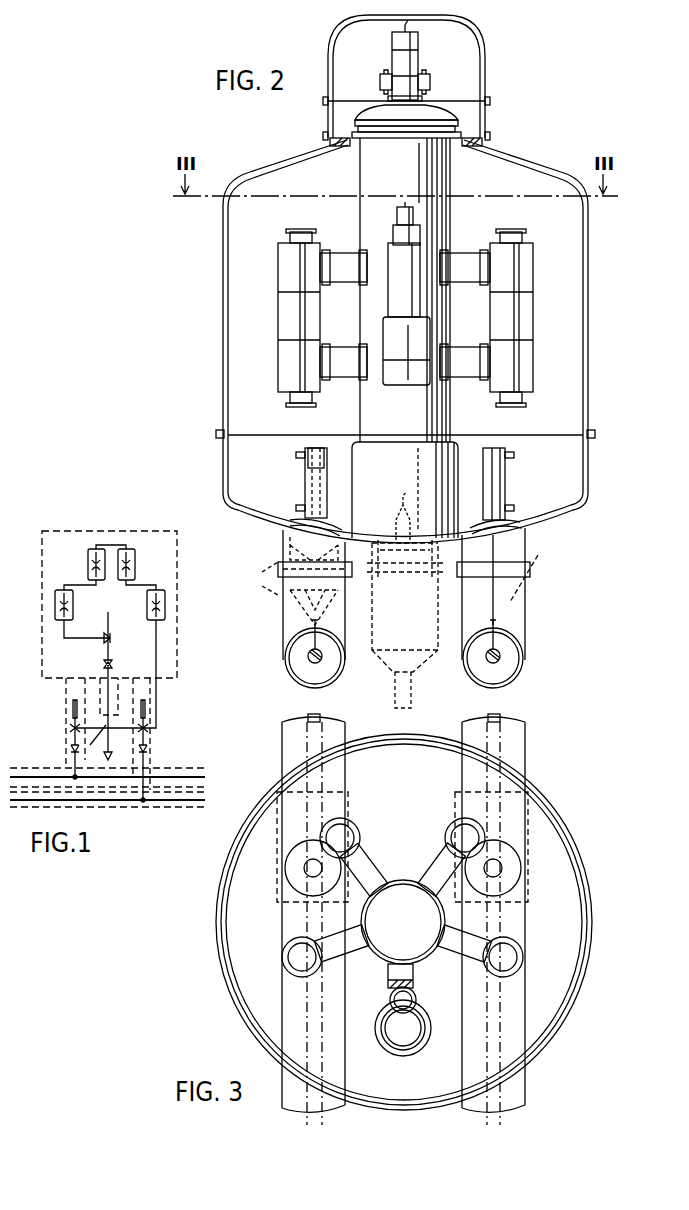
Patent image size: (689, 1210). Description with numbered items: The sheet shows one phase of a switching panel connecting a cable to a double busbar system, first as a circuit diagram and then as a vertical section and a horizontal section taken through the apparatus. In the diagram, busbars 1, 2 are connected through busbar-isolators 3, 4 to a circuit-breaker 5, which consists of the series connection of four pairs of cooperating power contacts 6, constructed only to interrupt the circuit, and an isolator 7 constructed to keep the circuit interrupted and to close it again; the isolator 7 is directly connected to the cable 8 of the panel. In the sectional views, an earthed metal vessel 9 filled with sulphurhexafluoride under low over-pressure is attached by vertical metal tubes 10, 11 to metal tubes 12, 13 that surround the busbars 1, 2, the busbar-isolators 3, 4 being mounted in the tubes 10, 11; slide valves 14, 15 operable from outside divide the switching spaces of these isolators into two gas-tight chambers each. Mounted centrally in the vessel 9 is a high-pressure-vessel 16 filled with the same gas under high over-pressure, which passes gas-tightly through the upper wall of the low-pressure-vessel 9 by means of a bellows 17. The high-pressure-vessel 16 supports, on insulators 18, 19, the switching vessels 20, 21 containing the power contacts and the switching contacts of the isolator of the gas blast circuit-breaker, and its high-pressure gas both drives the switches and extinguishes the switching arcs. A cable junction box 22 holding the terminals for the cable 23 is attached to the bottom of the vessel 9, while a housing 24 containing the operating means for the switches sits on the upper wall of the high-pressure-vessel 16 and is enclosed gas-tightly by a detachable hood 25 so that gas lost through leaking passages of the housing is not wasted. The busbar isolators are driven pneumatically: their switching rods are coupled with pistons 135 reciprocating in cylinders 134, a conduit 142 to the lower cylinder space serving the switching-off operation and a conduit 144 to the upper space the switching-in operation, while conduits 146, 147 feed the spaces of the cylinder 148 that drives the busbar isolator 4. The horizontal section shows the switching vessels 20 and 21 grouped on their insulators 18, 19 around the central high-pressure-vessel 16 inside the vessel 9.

In FIG. 2, the busbar 1 is at (308, 660).
In FIG. 1, the busbar 1 is at (176, 774).
In FIG. 2, the busbar 2 is at (500, 660).
In FIG. 1, the busbar 2 is at (174, 802).
In FIG. 2, the busbar-isolator 3 is at (260, 578).
In FIG. 1, the busbar-isolator 3 is at (68, 743).
In FIG. 2, the busbar-isolator 4 is at (530, 567).
In FIG. 1, the busbar-isolator 4 is at (150, 743).
In FIG. 1, the circuit-breaker 5 is at (177, 567).
In FIG. 1, the power contacts 6 is at (88, 558).
In FIG. 1, the isolator 7 is at (104, 651).
In FIG. 1, the cable 8 is at (99, 722).
In FIG. 2, the metal vessel 9 is at (222, 331).
In FIG. 2, the vertical metal tube 10 is at (283, 616).
In FIG. 2, the vertical metal tube 11 is at (525, 623).
In FIG. 2, the metal tube 12 is at (339, 675).
In FIG. 2, the metal tube 13 is at (512, 680).
In FIG. 2, the slide valve 14 is at (332, 572).
In FIG. 2, the slide valve 15 is at (462, 572).
In FIG. 2, the high-pressure-vessel 16 is at (430, 211).
In FIG. 2, the bellows 17 is at (452, 126).
In FIG. 2, the insulators 18 is at (345, 262).
In FIG. 3, the insulators 18 is at (442, 872).
In FIG. 3, the insulator 19 is at (392, 975).
In FIG. 2, the switching vessels 20 is at (286, 310).
In FIG. 3, the switching vessels 20 is at (352, 826).
In FIG. 2, the switching vessel 21 is at (401, 295).
In FIG. 3, the switching vessel 21 is at (416, 1040).
In FIG. 2, the cable junction box 22 is at (412, 612).
In FIG. 3, the cable junction box 22 is at (380, 1040).
In FIG. 2, the cable 23 is at (411, 690).
In FIG. 2, the housing 24 is at (405, 60).
In FIG. 2, the hood 25 is at (330, 52).
In FIG. 2, the cylinder 134 is at (305, 476).
In FIG. 2, the piston 135 is at (316, 450).
In FIG. 2, the conduit 142 is at (296, 508).
In FIG. 2, the conduit 144 is at (296, 455).
In FIG. 2, the conduit 146 is at (512, 508).
In FIG. 2, the conduit 147 is at (512, 455).
In FIG. 2, the cylinder 148 is at (495, 480).